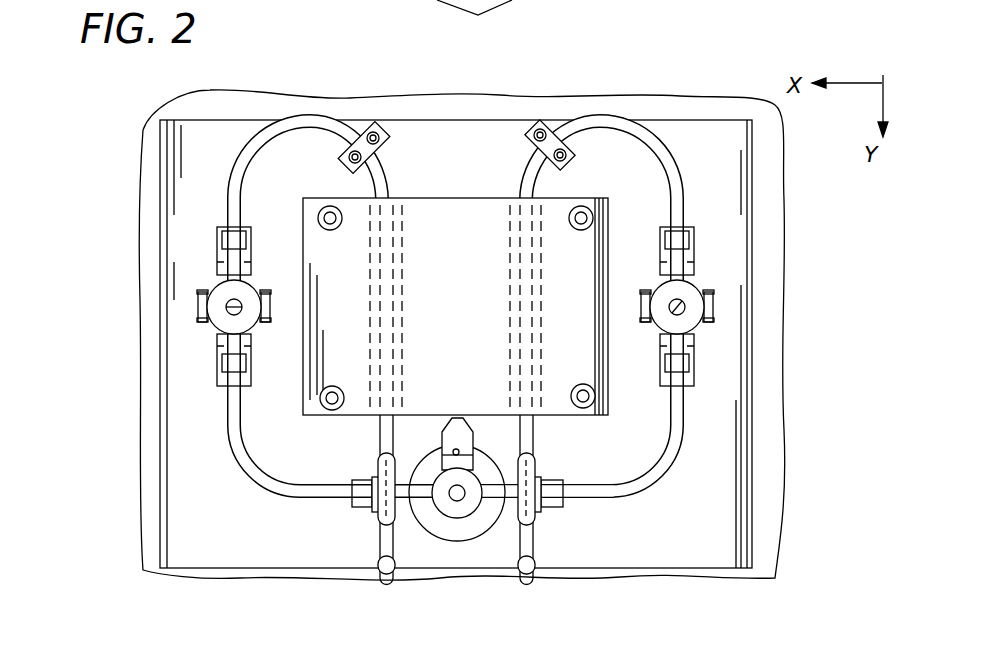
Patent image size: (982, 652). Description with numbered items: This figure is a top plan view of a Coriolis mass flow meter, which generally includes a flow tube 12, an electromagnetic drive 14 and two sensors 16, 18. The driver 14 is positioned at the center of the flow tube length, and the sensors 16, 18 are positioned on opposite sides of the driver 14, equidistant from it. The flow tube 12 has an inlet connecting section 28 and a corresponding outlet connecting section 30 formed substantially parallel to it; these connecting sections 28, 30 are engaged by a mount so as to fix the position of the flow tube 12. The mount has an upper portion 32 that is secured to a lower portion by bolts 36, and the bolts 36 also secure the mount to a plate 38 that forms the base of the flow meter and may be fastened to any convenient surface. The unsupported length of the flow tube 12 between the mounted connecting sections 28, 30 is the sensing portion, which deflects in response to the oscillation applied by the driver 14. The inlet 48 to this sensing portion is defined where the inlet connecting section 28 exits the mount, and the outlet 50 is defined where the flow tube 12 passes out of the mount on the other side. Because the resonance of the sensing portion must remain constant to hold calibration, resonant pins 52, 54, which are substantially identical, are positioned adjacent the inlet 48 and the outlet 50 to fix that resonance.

The flow tube 12 is at (672, 167).
The electromagnetic drive 14 is at (433, 543).
The sensor 16 is at (210, 341).
The sensor 18 is at (724, 264).
The inlet connecting section 28 is at (388, 518).
The outlet connecting section 30 is at (532, 515).
The upper portion 32 is at (447, 206).
The bolts 36 is at (331, 206).
The plate 38 is at (707, 525).
The inlet 48 is at (378, 165).
The outlet 50 is at (531, 170).
The resonant pin 52 is at (364, 128).
The resonant pin 54 is at (555, 127).